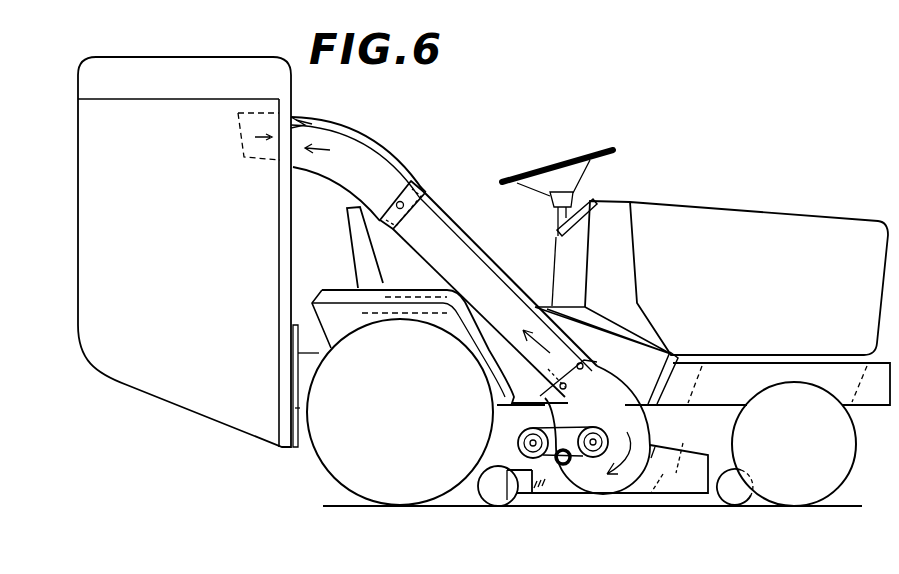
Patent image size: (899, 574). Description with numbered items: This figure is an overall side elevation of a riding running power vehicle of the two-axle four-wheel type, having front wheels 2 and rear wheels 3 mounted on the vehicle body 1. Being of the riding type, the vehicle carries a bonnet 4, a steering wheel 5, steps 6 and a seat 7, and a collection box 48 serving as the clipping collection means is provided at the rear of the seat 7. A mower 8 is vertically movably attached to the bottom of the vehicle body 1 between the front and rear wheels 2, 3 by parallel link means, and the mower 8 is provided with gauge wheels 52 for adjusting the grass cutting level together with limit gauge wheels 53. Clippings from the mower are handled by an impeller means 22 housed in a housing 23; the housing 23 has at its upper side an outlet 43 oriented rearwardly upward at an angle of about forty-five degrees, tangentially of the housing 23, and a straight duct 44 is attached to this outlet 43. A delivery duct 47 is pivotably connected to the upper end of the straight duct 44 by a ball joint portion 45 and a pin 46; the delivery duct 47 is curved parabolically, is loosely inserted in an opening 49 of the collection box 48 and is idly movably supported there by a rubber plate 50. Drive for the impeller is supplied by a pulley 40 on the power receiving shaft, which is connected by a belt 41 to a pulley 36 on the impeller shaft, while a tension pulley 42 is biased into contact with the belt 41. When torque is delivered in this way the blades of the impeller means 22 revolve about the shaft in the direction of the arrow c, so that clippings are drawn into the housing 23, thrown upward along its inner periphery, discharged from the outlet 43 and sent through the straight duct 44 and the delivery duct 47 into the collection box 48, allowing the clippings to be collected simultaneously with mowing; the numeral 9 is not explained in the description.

The vehicle body 1 is at (714, 395).
The front wheels 2 is at (848, 451).
The rear wheels 3 is at (323, 469).
The bonnet 4 is at (770, 219).
The steering wheel 5 is at (558, 180).
The steps 6 is at (641, 400).
The seat 7 is at (352, 252).
The mower 8 is at (675, 502).
The housing wall 9 is at (655, 447).
The impeller means 22 is at (660, 464).
The housing 23 is at (615, 484).
The pulley 36 is at (594, 458).
The pulley 40 is at (517, 437).
The belt 41 is at (571, 428).
The tension pulley 42 is at (563, 466).
The outlet 43 is at (599, 379).
The straight duct 44 is at (506, 282).
The ball joint portion 45 is at (427, 190).
The pin 46 is at (403, 198).
The delivery duct 47 is at (350, 151).
The collection box 48 is at (187, 105).
The opening 49 is at (276, 166).
The rubber plate 50 is at (310, 120).
The gauge wheels 52 is at (498, 501).
The limit gauge wheels 53 is at (733, 501).